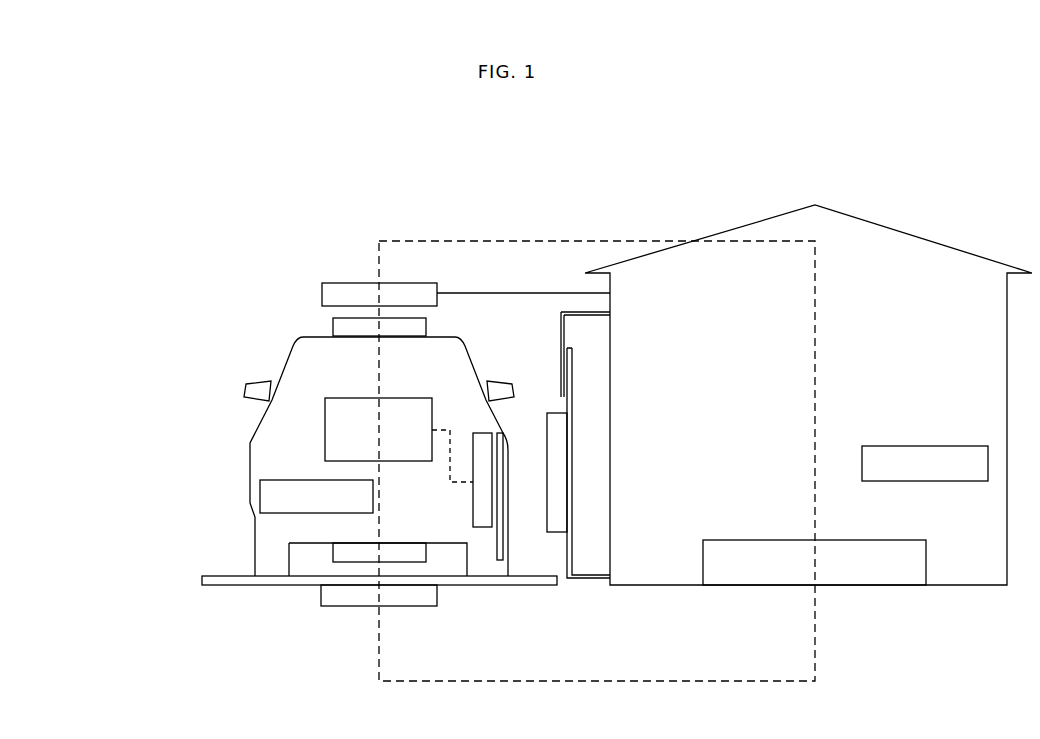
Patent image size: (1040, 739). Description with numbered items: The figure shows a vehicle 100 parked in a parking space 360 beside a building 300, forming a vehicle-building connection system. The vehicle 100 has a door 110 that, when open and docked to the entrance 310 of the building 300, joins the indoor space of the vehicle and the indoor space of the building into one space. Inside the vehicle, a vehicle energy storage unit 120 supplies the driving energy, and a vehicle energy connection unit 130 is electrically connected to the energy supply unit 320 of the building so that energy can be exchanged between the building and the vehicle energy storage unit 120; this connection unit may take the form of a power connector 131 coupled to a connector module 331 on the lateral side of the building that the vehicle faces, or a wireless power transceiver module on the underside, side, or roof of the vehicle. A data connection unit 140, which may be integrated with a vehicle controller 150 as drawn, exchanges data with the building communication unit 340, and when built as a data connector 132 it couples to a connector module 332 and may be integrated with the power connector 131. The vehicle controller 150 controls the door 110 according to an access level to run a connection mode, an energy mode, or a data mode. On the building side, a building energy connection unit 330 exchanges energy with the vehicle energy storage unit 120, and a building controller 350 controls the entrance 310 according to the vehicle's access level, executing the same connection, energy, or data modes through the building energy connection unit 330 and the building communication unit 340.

The vehicle 100 is at (268, 373).
The door 110 is at (503, 543).
The vehicle energy storage unit 120 is at (325, 430).
The vehicle energy connection unit 130 is at (333, 324).
The power connector 131 is at (454, 540).
The data connector 132 is at (483, 523).
The data connection unit 140 is at (256, 498).
The vehicle controller 150 is at (260, 497).
The building 300 is at (864, 192).
The entrance 310 is at (568, 375).
The energy supply unit 320 is at (853, 585).
The building energy connection unit 330 is at (348, 290).
The connector module 331 is at (613, 521).
The connector module 332 is at (560, 508).
The building communication unit 340 is at (932, 549).
The building controller 350 is at (945, 481).
The parking space 360 is at (222, 585).